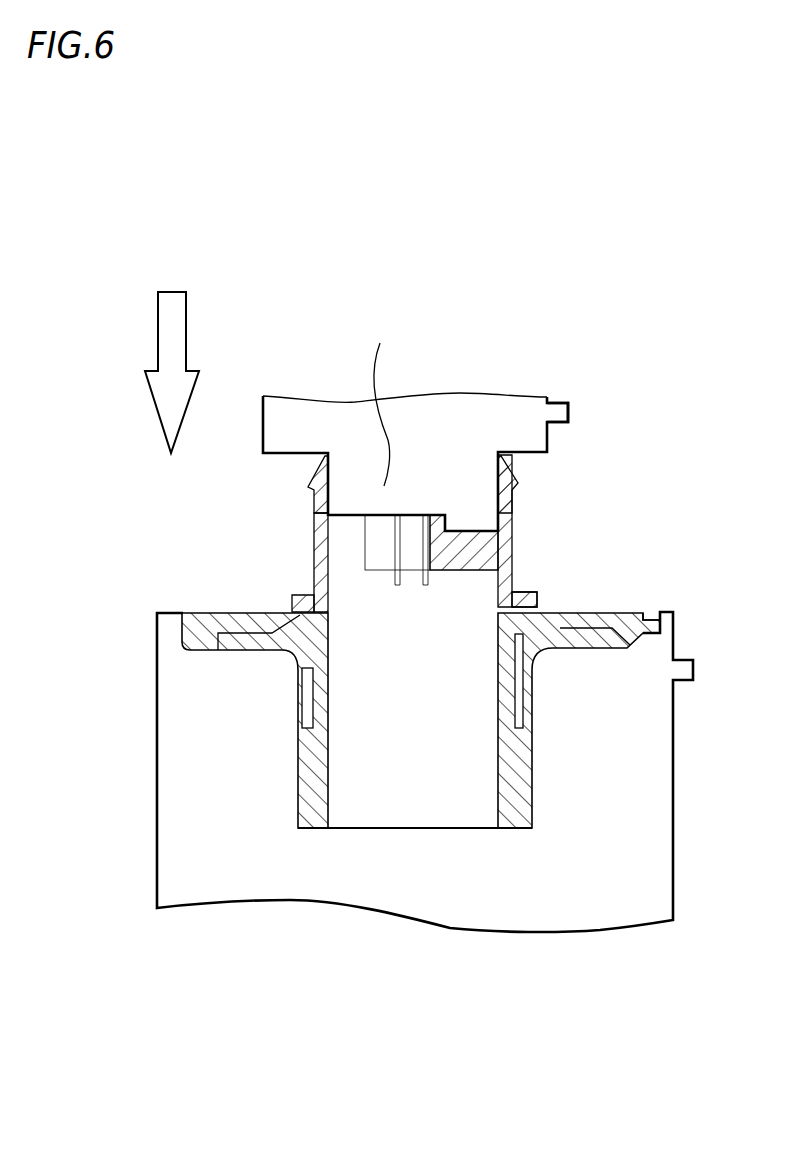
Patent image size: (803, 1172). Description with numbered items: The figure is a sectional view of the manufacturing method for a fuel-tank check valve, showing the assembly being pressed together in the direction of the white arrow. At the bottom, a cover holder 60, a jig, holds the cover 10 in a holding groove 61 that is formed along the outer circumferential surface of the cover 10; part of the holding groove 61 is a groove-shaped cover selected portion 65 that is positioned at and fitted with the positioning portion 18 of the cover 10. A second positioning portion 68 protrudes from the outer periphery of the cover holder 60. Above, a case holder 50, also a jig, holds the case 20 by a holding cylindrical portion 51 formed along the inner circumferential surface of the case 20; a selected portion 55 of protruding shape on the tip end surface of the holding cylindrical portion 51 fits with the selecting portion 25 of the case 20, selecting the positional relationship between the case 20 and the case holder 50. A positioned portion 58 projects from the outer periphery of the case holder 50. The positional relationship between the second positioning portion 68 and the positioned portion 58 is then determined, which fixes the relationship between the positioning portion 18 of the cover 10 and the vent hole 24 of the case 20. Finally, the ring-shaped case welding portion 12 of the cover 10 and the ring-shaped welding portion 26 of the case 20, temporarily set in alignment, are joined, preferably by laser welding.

The cover 10 is at (400, 787).
The case welding portion 12 is at (518, 613).
The positioning portion 18 is at (650, 618).
The case 20 is at (348, 558).
The vent hole 24 is at (316, 508).
The selecting portion 25 is at (478, 537).
The welding portion 26 is at (523, 593).
The case holder 50 is at (485, 413).
The holding cylindrical portion 51 is at (380, 396).
The selected portion 55 is at (483, 518).
The positioned portion 58 is at (562, 400).
The cover holder 60 is at (557, 898).
The holding groove 61 is at (302, 750).
The cover selected portion 65 is at (657, 635).
The second positioning portion 68 is at (684, 684).